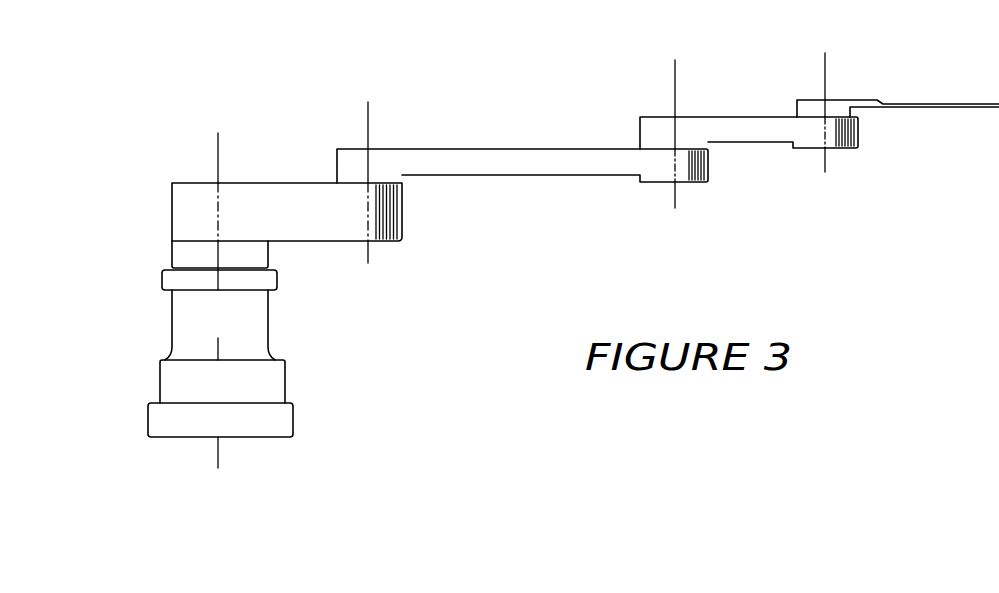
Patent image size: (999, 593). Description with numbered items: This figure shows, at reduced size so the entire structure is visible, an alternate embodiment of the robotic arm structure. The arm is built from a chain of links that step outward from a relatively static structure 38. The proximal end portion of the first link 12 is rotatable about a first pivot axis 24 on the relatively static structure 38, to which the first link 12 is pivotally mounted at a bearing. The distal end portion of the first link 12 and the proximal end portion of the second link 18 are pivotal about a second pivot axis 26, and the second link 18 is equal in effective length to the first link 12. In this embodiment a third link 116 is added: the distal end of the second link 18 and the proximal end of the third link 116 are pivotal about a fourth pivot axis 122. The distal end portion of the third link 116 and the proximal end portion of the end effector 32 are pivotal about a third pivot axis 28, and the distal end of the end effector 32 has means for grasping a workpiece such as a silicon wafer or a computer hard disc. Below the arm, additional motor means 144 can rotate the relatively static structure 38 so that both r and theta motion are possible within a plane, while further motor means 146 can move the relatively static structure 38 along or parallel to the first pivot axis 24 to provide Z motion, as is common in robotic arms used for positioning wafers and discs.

The first longitudinally extending link 12 is at (302, 181).
The second longitudinally extending link 18 is at (544, 146).
The first pivot axis 24 is at (219, 148).
The second pivot axis 26 is at (369, 122).
The third pivot axis 28 is at (826, 78).
The end effector 32 is at (976, 98).
The relatively static structure 38 is at (233, 332).
The third link 116 is at (766, 115).
The fourth pivot axis 122 is at (676, 85).
The additional motor means 144 is at (241, 395).
The motor means 146 is at (241, 432).